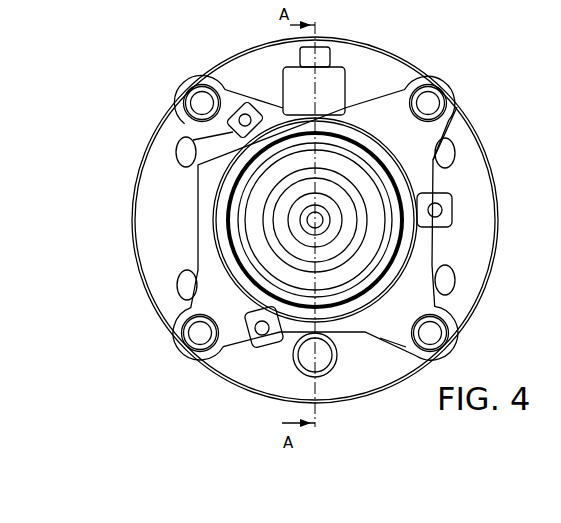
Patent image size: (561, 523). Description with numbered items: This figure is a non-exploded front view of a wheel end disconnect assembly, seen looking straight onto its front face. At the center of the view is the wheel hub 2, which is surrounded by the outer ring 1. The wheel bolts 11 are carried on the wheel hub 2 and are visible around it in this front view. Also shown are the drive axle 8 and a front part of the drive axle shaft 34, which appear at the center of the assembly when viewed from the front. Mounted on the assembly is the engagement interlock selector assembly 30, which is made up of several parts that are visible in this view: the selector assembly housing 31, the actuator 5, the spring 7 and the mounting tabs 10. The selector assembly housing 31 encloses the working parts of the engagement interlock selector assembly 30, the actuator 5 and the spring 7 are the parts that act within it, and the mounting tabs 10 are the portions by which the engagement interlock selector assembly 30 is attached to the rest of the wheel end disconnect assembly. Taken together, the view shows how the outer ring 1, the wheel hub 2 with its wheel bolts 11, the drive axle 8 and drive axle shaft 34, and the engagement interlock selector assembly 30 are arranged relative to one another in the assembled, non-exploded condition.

The outer ring 1 is at (457, 93).
The wheel hub 2 is at (395, 70).
The actuator 5 is at (293, 80).
The spring 7 is at (253, 187).
The drive axle 8 is at (257, 302).
The mounting tabs 10 is at (200, 141).
The wheel bolts 11 is at (462, 268).
The engagement interlock selector assembly 30 is at (205, 220).
The selector assembly housing 31 is at (235, 255).
The drive axle shaft 34 is at (430, 313).